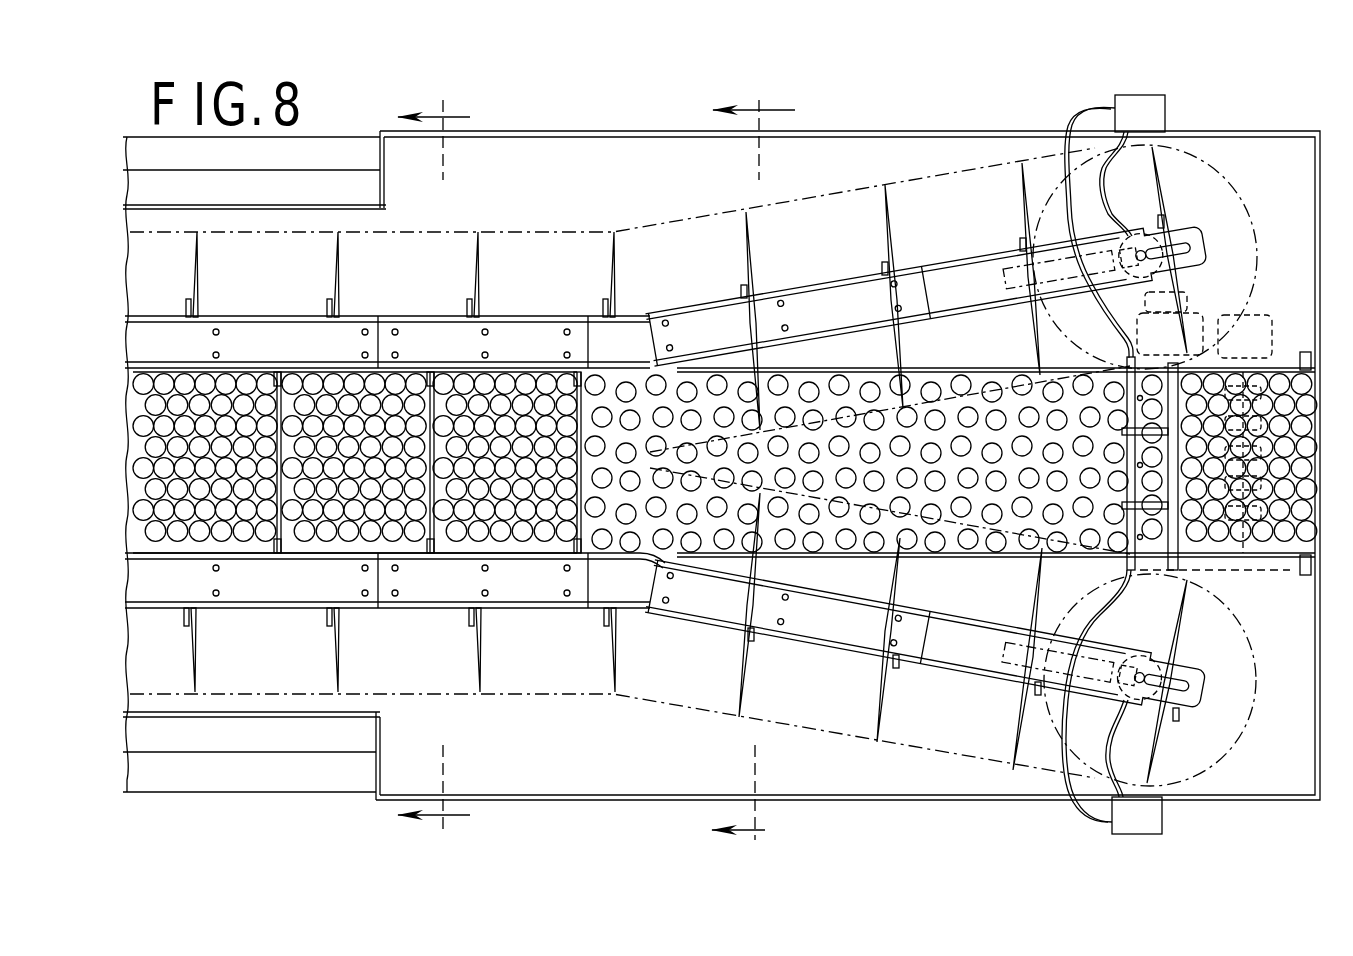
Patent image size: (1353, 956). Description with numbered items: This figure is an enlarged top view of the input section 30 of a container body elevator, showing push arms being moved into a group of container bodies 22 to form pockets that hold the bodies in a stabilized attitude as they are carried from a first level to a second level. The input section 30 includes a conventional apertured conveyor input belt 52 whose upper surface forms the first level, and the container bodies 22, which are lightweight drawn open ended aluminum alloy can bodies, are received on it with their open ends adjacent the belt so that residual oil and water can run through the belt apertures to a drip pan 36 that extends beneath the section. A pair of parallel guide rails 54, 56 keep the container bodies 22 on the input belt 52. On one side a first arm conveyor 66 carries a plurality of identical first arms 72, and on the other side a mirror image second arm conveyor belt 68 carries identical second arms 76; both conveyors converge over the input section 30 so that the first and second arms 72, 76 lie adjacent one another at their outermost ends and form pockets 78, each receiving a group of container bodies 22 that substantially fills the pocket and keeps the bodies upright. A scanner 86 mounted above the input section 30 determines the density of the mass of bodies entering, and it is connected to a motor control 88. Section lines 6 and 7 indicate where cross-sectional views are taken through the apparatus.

The drip pan 36 is at (596, 126).
The input section 30 is at (851, 268).
The second arm conveyor belt 68 is at (343, 340).
The first arm conveyor 66 is at (455, 582).
The pockets 78 is at (454, 385).
The second arms 76 is at (580, 397).
The first arms 72 is at (578, 492).
The conveyor input belt 52 is at (744, 538).
The container bodies 22 is at (847, 548).
The guide rail 56 is at (956, 371).
The guide rail 54 is at (968, 560).
The scanner 86 is at (1172, 472).
The motor control 88 is at (1143, 115).
The section line 6- 6 is at (754, 467).
The section line 7- 7 is at (438, 462).